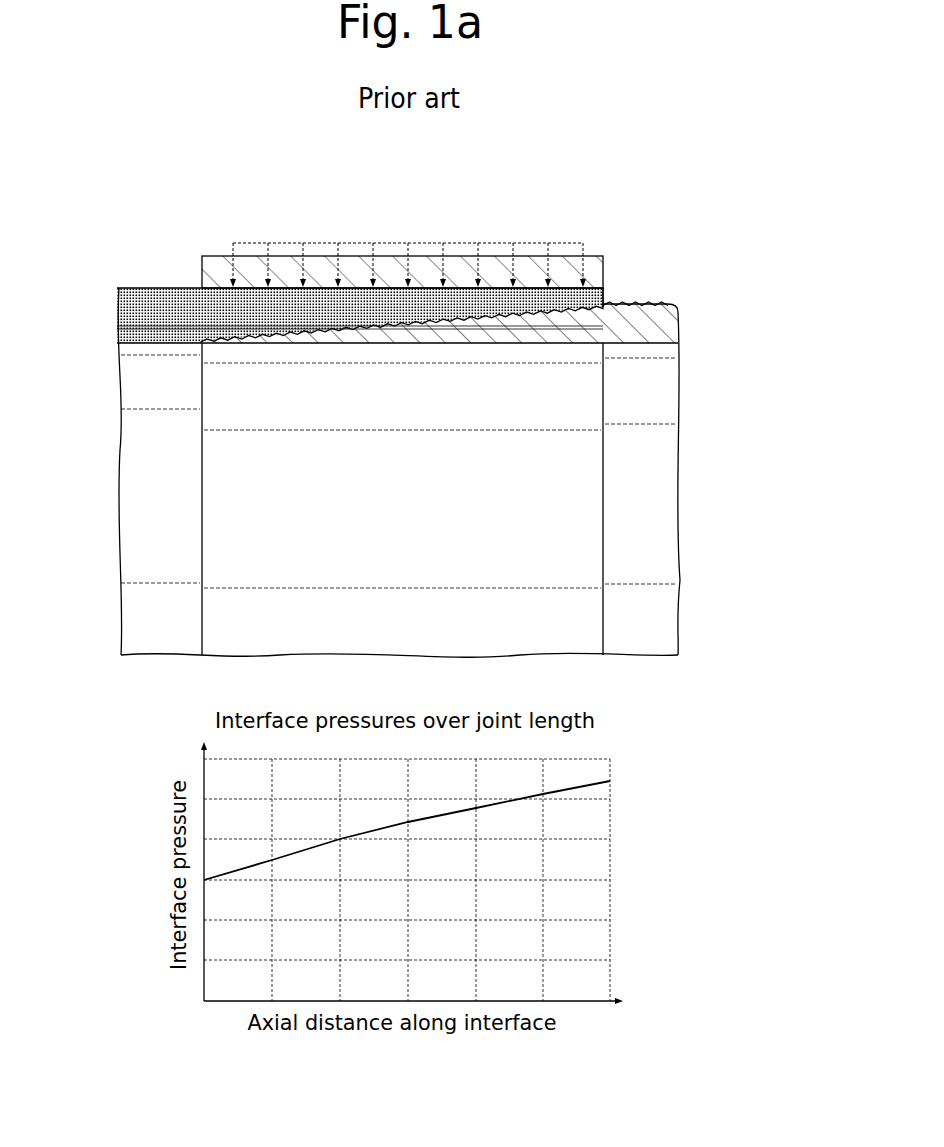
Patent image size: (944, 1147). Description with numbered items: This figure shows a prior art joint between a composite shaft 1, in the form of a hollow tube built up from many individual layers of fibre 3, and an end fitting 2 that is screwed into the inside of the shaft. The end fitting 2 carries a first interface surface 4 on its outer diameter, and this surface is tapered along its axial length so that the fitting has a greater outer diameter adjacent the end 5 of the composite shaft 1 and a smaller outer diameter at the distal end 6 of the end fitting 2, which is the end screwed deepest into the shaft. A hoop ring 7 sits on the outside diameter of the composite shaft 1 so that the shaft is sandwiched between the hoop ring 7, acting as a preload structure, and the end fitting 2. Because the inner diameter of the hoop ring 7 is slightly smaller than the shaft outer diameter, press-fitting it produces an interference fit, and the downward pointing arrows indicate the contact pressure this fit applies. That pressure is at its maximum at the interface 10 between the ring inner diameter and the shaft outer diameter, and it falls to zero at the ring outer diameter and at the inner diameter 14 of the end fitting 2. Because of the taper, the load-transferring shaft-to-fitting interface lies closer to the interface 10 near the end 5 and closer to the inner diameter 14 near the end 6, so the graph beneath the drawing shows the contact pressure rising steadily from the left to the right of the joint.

The composite shaft 1 is at (398, 308).
The end fitting 2 is at (625, 327).
The layers of fibre 3 is at (131, 319).
The first interface surface 4 is at (268, 339).
The end of the composite shaft 5 is at (605, 299).
The distal end of the end fitting 6 is at (200, 348).
The hoop ring 7 is at (500, 270).
The interface 10 is at (282, 287).
The inner diameter of the end fitting 14 is at (363, 350).